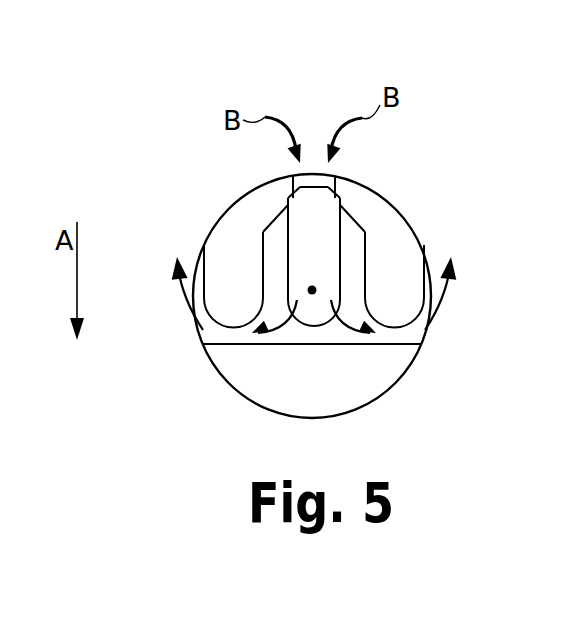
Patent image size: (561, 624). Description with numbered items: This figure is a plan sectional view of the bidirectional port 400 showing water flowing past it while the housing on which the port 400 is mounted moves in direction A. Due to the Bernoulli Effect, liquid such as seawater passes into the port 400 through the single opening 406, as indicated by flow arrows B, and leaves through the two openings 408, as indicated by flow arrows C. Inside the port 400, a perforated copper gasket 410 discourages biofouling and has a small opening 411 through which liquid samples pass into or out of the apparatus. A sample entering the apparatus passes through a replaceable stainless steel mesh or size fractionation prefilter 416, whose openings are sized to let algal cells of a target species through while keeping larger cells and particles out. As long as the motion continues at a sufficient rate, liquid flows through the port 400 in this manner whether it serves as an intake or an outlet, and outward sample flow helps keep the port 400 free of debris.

The bidirectional port 400 is at (447, 104).
The opening 406 is at (313, 180).
The openings 408 is at (201, 330).
The perforated copper gasket 410 is at (350, 250).
The small opening 411 is at (312, 290).
The prefilter 416 is at (322, 215).